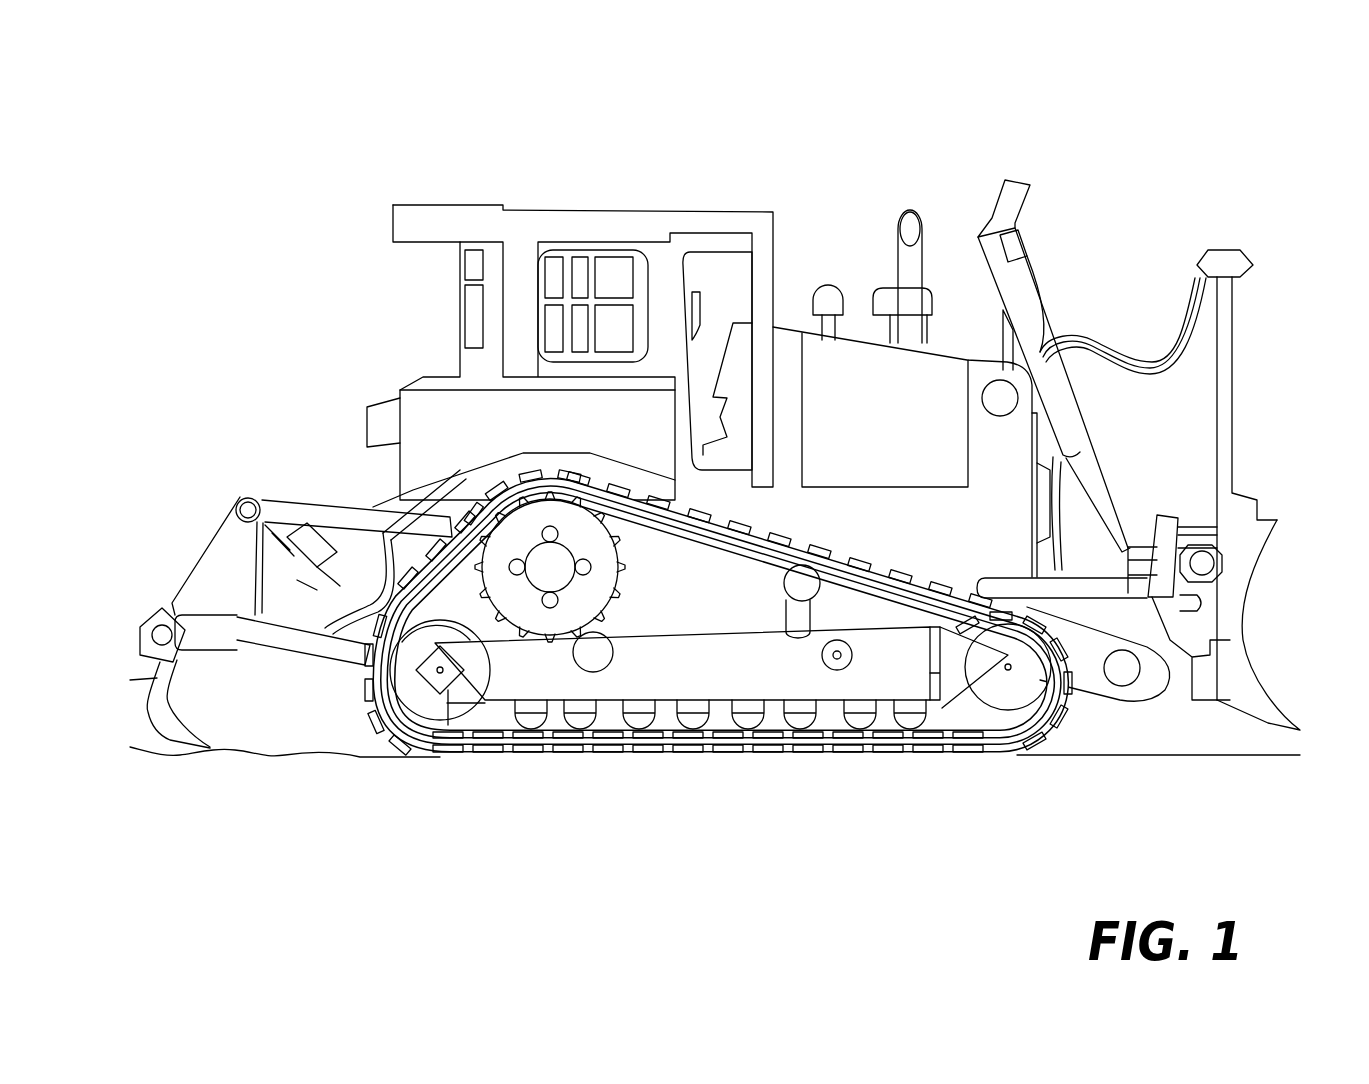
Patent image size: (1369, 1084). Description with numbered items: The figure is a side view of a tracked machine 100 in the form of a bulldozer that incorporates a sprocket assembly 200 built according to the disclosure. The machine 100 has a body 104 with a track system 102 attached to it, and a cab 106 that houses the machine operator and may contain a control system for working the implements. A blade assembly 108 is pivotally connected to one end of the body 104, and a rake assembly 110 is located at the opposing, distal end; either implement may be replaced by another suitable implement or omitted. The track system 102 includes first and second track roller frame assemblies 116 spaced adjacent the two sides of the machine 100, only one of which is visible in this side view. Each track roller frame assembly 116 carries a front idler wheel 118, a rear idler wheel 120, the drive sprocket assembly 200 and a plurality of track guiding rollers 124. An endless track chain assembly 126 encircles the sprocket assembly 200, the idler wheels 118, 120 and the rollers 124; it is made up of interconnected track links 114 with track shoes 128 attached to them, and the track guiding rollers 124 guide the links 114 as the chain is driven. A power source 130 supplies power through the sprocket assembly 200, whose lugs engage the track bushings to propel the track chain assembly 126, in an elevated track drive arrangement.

The tracked machine 100 is at (701, 456).
The track system 102 is at (880, 552).
The body 104 is at (980, 546).
The cab 106 is at (577, 227).
The blade assembly 108 is at (1238, 588).
The rake assembly 110 is at (155, 680).
The track links 114 is at (463, 755).
The track roller frame assembly 116 is at (706, 574).
The front idler wheel 118 is at (1022, 690).
The rear idler wheel 120 is at (402, 730).
The track guiding rollers 124 is at (785, 585).
The track chain assembly 126 is at (1000, 748).
The track shoes 128 is at (667, 755).
The power source 130 is at (862, 365).
The sprocket assembly 200 is at (555, 500).